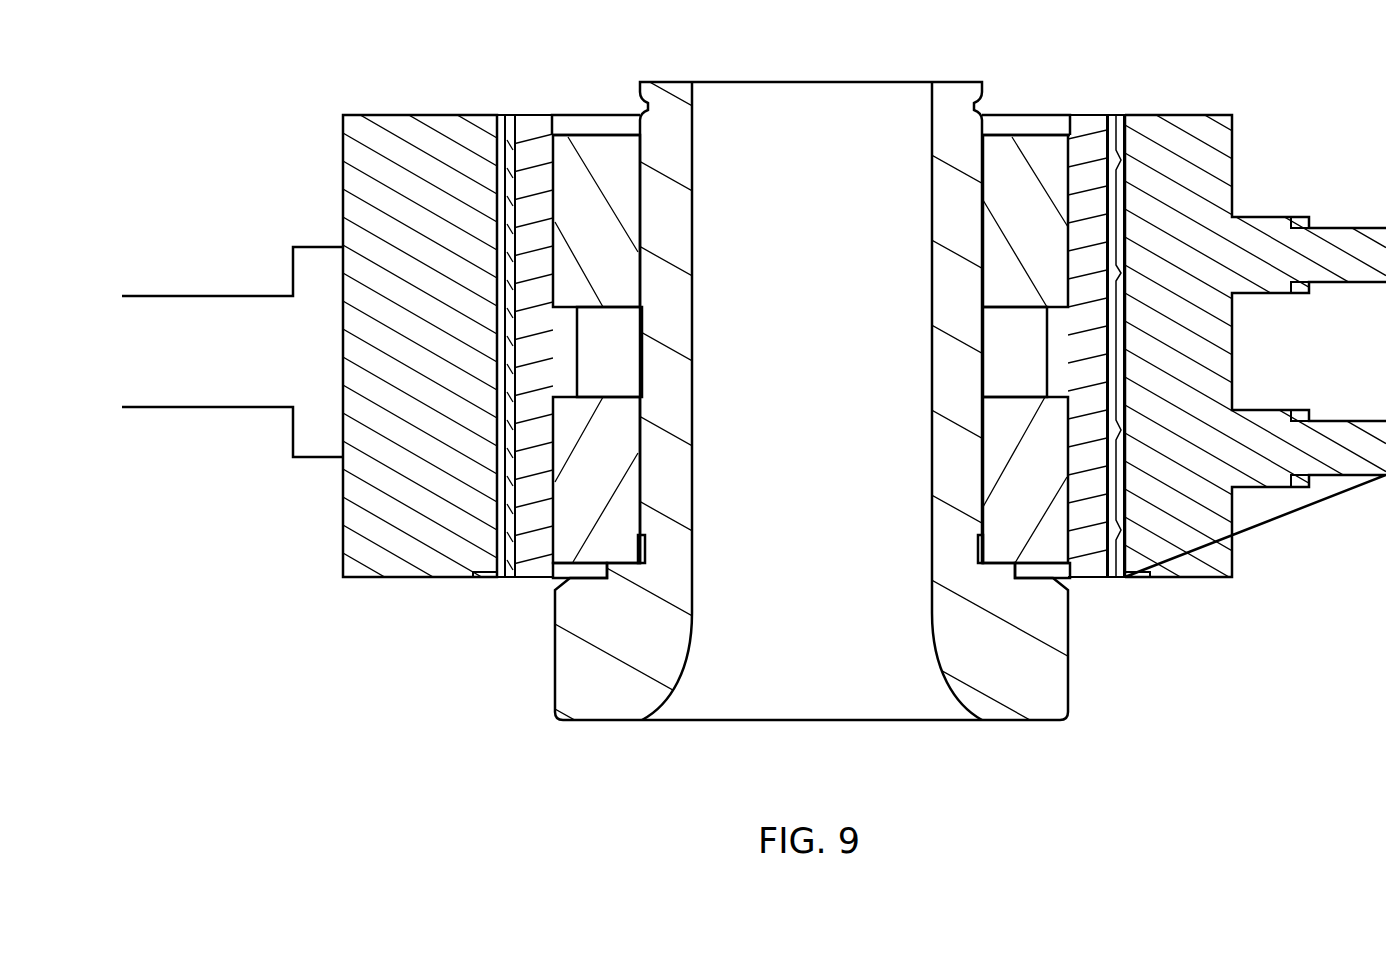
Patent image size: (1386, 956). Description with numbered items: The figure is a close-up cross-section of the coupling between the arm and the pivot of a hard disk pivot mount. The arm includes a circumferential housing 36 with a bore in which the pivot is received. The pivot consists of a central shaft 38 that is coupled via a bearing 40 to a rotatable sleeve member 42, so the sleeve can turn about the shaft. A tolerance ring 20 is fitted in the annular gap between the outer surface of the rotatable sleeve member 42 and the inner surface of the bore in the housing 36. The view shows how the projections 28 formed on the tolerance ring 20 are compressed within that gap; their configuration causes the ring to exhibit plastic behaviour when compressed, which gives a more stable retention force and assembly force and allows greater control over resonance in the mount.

The tolerance ring 20 is at (1118, 158).
The projections 28 is at (1127, 202).
The housing 36 is at (1187, 552).
The shaft 38 is at (1027, 700).
The bearing 40 is at (1035, 545).
The rotatable sleeve member 42 is at (1087, 150).